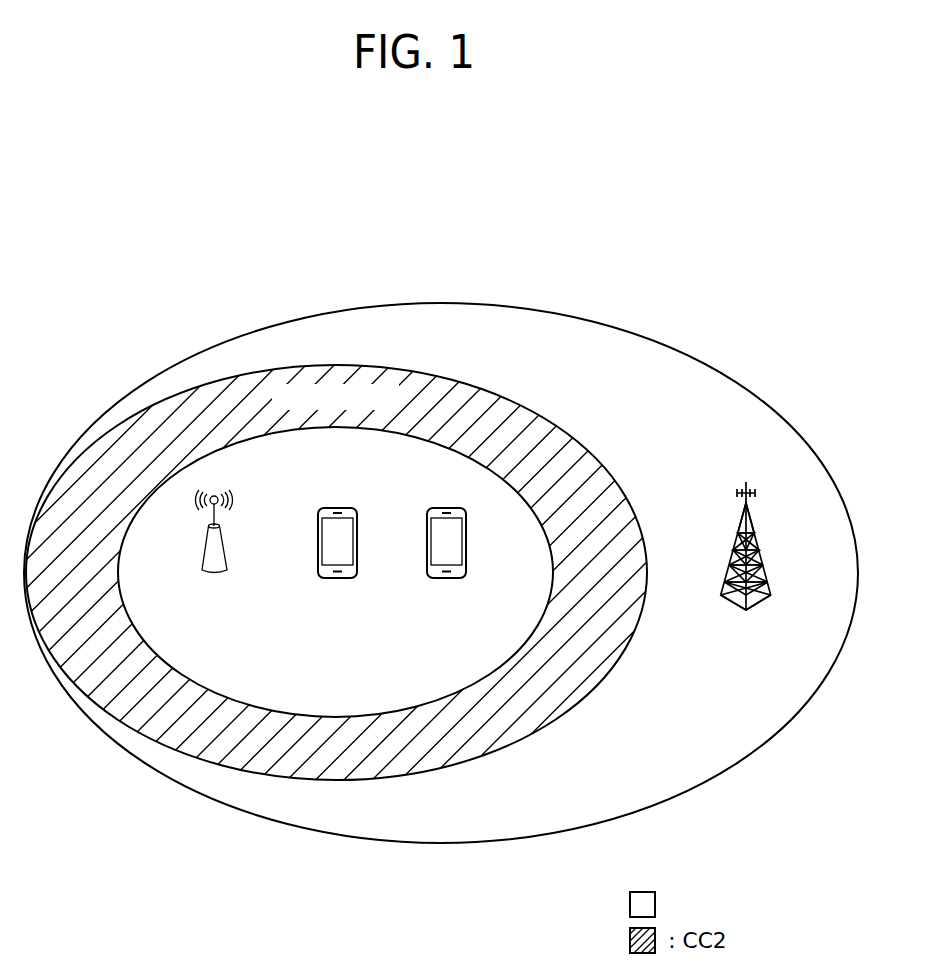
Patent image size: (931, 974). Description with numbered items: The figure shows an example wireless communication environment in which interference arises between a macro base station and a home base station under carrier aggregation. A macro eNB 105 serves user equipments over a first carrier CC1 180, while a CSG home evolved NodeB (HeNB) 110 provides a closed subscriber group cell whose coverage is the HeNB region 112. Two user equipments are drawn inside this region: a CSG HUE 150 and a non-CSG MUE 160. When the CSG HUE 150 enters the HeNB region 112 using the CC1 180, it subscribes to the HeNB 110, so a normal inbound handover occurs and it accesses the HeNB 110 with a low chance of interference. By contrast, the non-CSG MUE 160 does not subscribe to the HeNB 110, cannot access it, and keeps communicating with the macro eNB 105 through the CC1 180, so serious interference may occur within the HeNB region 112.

The macro eNB 105 is at (740, 577).
The CSG home evolved NodeB (HeNB) 110 is at (214, 581).
The HeNB region 112 is at (283, 692).
The CSG HUE 150 is at (335, 590).
The non-CSG MUE 160 is at (444, 590).
The first carrier CC1 180 is at (711, 904).